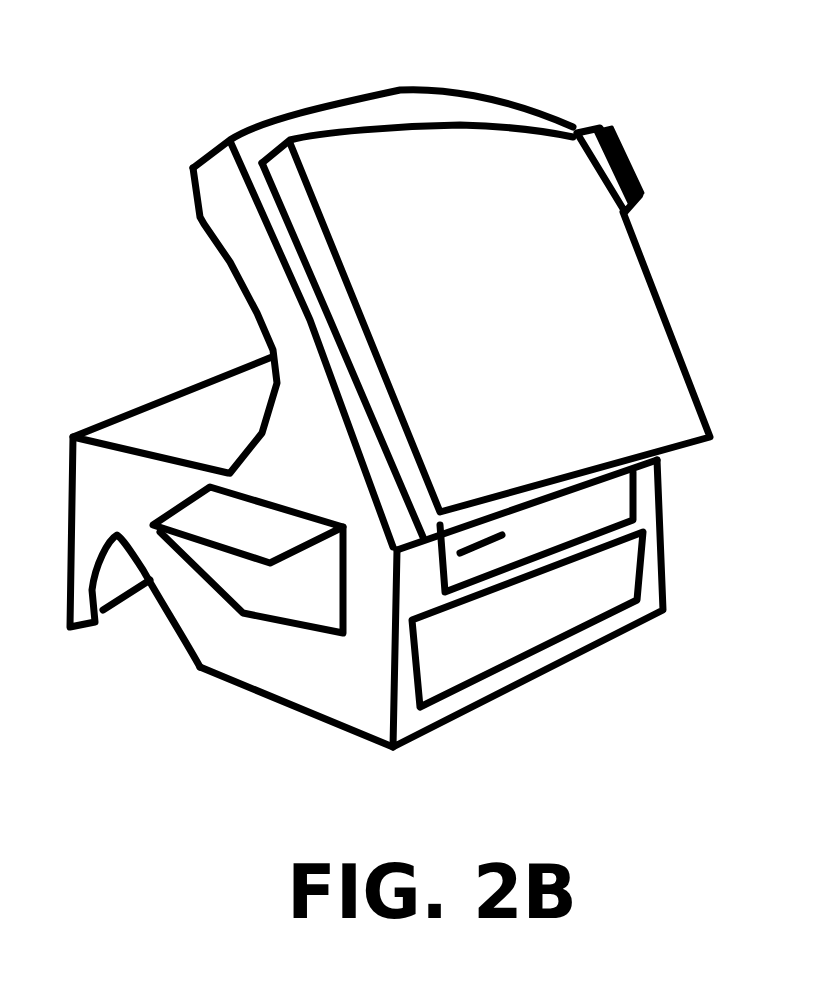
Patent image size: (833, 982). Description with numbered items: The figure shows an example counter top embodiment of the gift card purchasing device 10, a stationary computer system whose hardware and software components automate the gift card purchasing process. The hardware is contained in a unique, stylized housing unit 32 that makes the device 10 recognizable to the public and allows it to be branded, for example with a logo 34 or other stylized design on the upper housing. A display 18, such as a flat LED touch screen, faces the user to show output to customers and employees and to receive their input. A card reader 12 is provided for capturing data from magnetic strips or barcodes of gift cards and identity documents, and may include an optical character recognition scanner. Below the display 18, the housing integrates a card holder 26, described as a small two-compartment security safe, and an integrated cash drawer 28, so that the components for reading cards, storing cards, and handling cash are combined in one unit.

The gift card purchasing device 10 is at (700, 33).
The card reader 12 is at (633, 160).
The display 18 is at (647, 370).
The card holder 26 is at (607, 500).
The cash drawer 28 is at (620, 583).
The housing unit 32 is at (215, 312).
The logo 34 is at (400, 90).